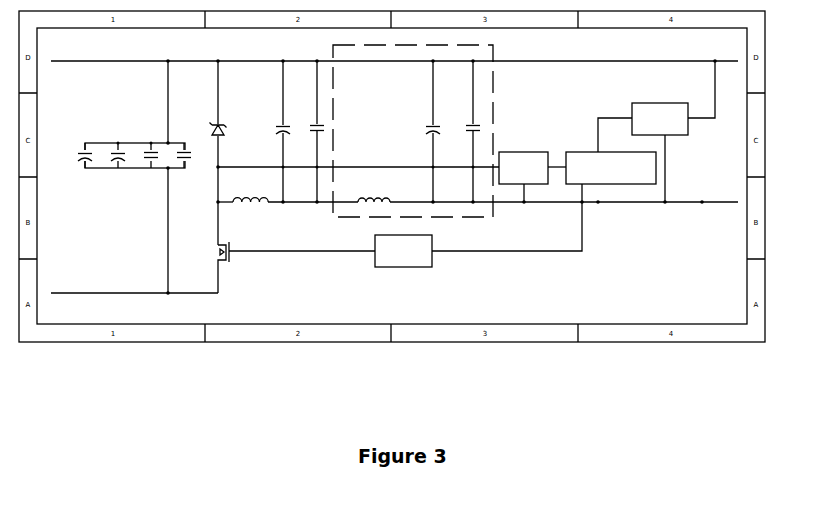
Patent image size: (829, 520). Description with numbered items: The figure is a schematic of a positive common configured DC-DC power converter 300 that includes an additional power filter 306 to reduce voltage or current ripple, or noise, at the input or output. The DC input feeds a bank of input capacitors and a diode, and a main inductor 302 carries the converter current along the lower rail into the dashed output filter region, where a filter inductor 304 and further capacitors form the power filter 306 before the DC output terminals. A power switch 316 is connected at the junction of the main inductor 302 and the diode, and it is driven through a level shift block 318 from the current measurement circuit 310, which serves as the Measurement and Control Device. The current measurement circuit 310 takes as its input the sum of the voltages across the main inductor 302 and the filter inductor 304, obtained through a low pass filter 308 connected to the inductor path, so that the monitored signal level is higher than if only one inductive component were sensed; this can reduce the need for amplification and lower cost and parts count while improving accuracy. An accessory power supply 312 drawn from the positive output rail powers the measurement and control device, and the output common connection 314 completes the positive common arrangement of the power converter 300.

The power converter 300 is at (395, 210).
The main inductor 302 is at (262, 219).
The filter inductor 304 is at (355, 178).
The power filter 306 is at (478, 216).
The low pass filter 308 is at (524, 152).
The current measurement circuit 310 is at (624, 184).
The accessory power supply 312 is at (662, 103).
The DC output 314 is at (702, 202).
The switching transistor 316 is at (232, 261).
The level shift 318 is at (405, 267).